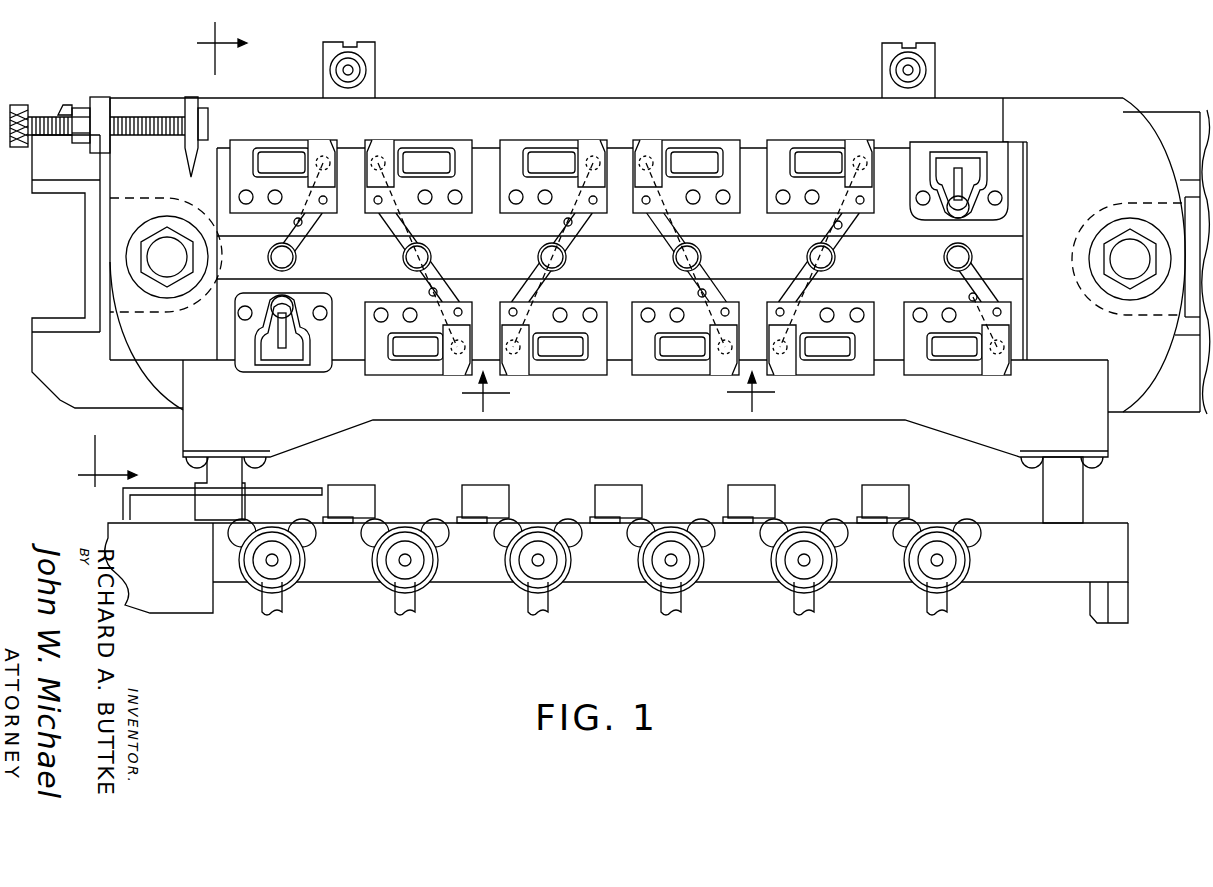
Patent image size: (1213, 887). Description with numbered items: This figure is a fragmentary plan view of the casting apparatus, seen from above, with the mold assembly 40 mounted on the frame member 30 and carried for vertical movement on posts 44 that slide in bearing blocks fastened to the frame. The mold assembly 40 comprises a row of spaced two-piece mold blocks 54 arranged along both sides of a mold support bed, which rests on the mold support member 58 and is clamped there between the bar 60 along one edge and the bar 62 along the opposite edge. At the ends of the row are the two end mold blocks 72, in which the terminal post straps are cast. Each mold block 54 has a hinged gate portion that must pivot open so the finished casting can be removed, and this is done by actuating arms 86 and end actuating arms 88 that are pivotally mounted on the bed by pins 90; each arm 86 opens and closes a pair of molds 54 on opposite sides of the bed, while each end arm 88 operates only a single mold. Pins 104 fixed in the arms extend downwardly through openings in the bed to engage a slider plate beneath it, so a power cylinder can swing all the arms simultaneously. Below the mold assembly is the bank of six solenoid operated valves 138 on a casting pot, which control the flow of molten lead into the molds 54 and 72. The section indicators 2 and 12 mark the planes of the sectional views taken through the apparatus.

The section line 2- 2 is at (174, 254).
The section line 12- 12 is at (618, 396).
The frame member 30 is at (92, 226).
The mold assembly 40 is at (676, 89).
The post 44 is at (158, 253).
The two-piece mold block 54 is at (253, 226).
The mold support member 58 is at (1095, 110).
The bar 60 is at (818, 115).
The bar 62 is at (416, 405).
The end mold block 72 is at (243, 364).
The actuating arm 86 is at (412, 230).
The end actuating arm 88 is at (300, 244).
The pin 90 is at (280, 270).
The pin 104 is at (302, 222).
The solenoid operated valve 138 is at (269, 563).